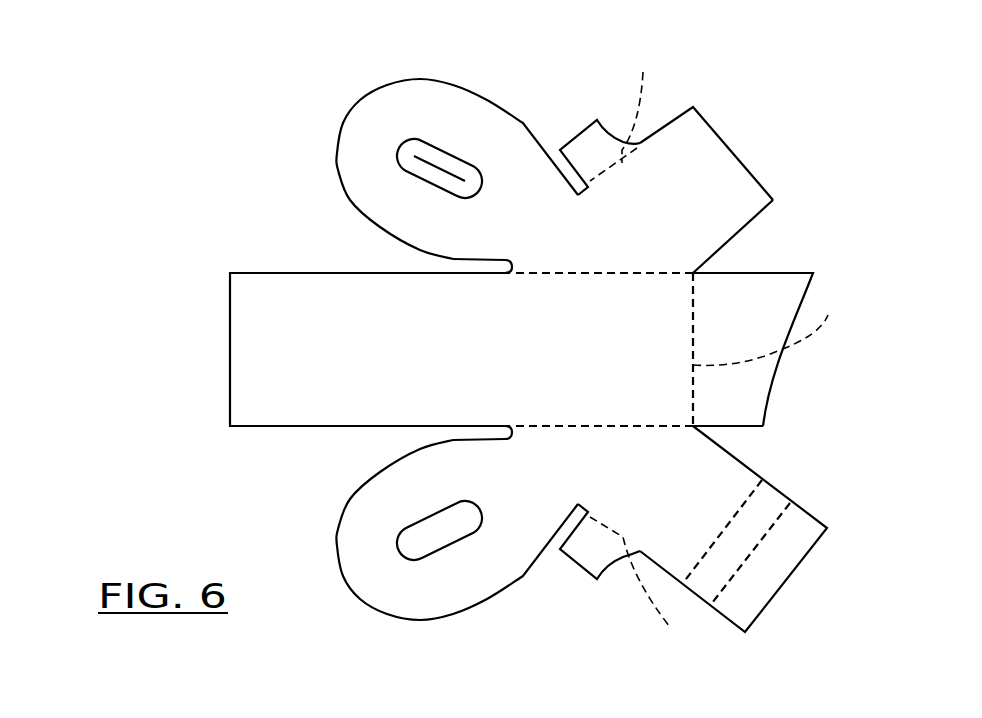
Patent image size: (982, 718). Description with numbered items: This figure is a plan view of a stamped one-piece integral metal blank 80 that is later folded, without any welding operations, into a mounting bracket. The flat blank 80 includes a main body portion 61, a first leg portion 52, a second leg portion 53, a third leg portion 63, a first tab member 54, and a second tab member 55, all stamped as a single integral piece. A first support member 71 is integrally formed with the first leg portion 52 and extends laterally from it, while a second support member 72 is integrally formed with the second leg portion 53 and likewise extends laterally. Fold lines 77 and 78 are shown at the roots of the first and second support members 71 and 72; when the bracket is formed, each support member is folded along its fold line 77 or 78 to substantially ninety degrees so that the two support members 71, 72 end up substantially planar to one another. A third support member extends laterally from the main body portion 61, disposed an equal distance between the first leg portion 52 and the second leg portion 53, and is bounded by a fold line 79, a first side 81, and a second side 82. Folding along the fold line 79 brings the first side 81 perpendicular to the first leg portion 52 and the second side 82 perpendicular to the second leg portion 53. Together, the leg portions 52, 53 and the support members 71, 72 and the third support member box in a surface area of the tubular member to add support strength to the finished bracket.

The one-piece integral metal blank 80 is at (229, 130).
The third leg portion 63 is at (282, 313).
The first tab member 54 is at (398, 122).
The second tab member 55 is at (368, 565).
The first support member 71 is at (590, 143).
The second support member 72 is at (593, 548).
The fold line 77 is at (625, 111).
The fold line 78 is at (637, 590).
The first leg portion 52 is at (722, 177).
The second leg portion 53 is at (687, 520).
The main body portion 61 is at (630, 350).
The first side 81 is at (773, 273).
The fold line 79 is at (769, 324).
The second side 82 is at (735, 427).